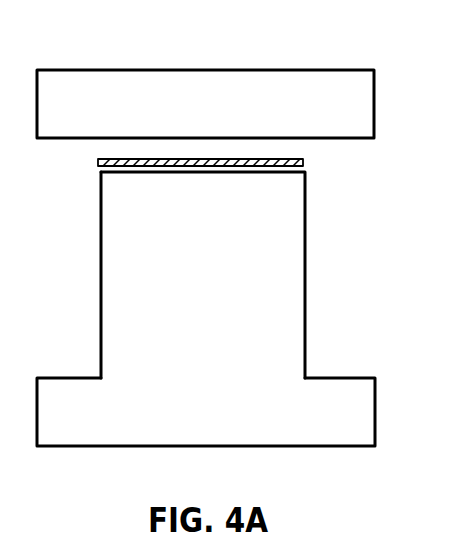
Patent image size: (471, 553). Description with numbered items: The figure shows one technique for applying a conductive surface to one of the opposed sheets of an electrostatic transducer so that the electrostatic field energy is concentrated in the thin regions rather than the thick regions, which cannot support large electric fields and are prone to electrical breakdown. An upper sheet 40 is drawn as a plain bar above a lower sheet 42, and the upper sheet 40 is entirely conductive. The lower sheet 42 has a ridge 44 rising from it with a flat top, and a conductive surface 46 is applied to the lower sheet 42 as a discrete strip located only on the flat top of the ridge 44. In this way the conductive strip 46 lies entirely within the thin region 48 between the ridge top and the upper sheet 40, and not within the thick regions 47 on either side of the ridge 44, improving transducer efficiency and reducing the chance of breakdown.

The upper sheet 40 is at (193, 99).
The lower sheet 42 is at (158, 424).
The ridge 44 is at (282, 276).
The conductive surface 46 is at (299, 160).
The thick region 47 is at (70, 317).
The thin region 48 is at (118, 148).